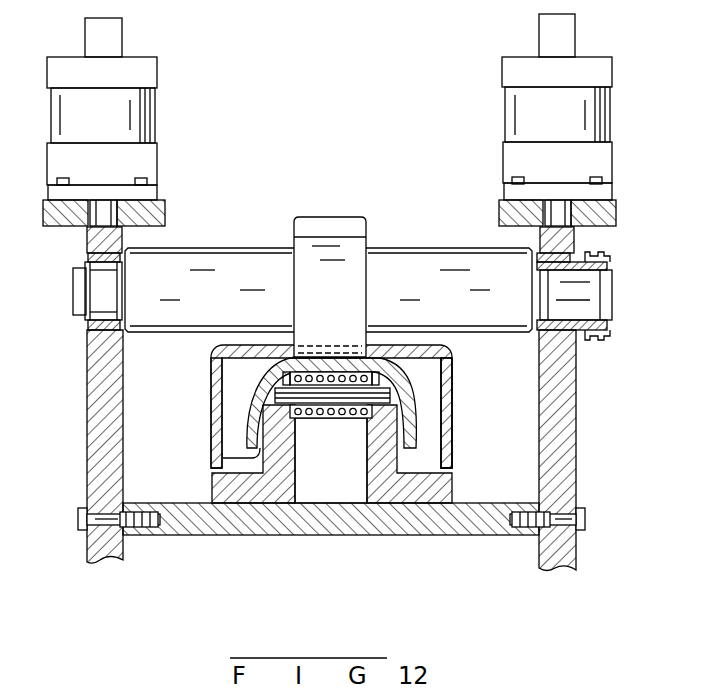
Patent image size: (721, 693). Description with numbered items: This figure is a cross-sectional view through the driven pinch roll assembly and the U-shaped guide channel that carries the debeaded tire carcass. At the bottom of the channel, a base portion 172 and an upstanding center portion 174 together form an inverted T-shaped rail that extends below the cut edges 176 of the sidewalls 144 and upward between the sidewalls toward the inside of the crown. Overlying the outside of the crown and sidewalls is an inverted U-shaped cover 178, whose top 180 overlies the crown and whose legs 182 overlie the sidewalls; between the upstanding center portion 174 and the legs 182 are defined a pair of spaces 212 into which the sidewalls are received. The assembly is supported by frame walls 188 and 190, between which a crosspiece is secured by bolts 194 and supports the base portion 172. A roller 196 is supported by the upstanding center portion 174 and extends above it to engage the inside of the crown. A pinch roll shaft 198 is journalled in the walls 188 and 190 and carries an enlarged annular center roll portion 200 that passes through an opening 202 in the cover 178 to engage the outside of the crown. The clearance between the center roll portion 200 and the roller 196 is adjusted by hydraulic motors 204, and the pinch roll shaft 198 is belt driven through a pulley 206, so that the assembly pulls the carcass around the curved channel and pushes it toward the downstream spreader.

The sidewalls 144 is at (245, 410).
The base portion 172 is at (455, 485).
The upstanding center portion 174 is at (298, 433).
The cut edges 176 is at (253, 457).
The cover 178 is at (440, 355).
The top 180 is at (232, 350).
The legs 182 is at (213, 443).
The frame wall 188 is at (88, 424).
The frame wall 190 is at (575, 405).
The bolts 194 is at (588, 520).
The roller 196 is at (350, 418).
The pinch roll shaft 198 is at (245, 247).
The center roll portion 200 is at (325, 217).
The opening 202 is at (325, 345).
The hydraulic motors 204 is at (606, 122).
The pulley 206 is at (610, 328).
The spaces 212 is at (232, 433).